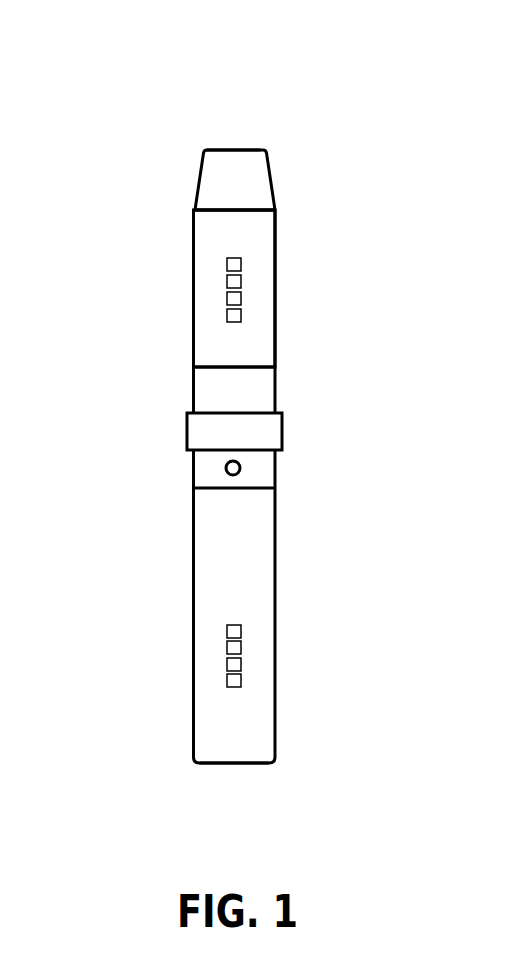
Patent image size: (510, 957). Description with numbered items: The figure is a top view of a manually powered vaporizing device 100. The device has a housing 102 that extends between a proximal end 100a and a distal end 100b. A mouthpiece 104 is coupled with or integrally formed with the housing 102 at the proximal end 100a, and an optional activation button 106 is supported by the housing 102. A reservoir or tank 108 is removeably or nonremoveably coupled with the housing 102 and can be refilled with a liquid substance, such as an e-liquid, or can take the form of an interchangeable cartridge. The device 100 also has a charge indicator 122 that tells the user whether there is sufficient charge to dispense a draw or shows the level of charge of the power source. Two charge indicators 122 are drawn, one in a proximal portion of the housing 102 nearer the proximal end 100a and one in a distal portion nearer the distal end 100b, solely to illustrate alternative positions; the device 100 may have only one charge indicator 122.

The manually powered vaporizing device 100 is at (196, 88).
The proximal end 100a is at (218, 148).
The distal end 100b is at (235, 764).
The housing 102 is at (156, 364).
The mouthpiece 104 is at (197, 182).
The activation button 106 is at (224, 468).
The reservoir or tank 108 is at (265, 280).
The charge indicator 122 is at (227, 278).